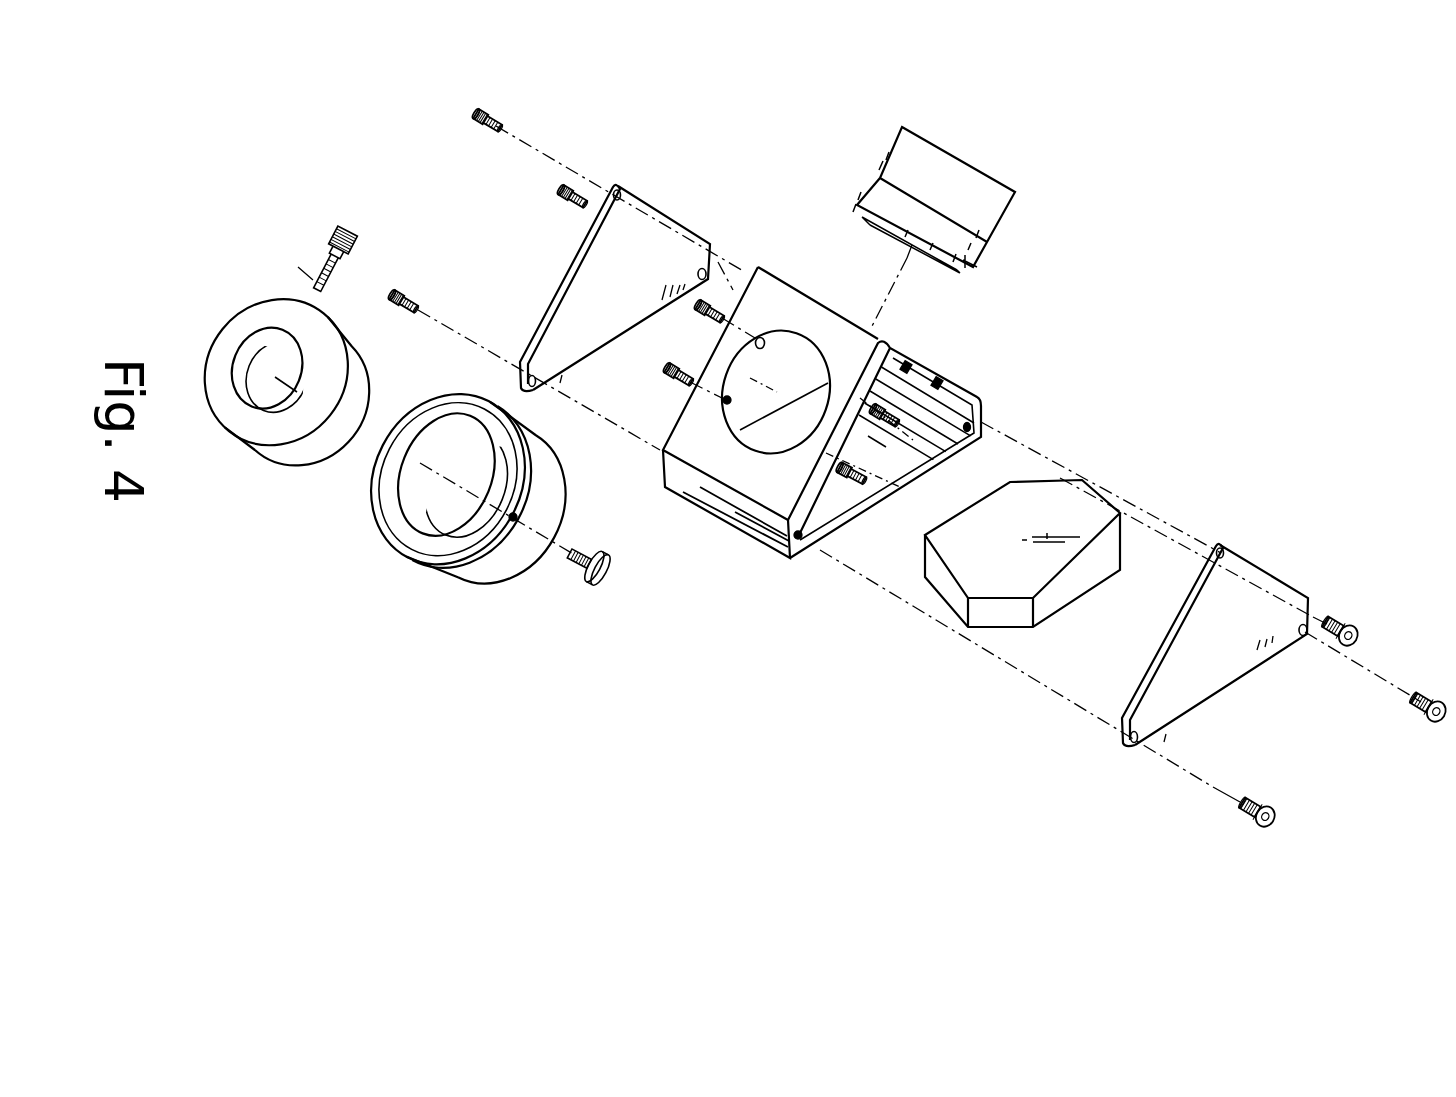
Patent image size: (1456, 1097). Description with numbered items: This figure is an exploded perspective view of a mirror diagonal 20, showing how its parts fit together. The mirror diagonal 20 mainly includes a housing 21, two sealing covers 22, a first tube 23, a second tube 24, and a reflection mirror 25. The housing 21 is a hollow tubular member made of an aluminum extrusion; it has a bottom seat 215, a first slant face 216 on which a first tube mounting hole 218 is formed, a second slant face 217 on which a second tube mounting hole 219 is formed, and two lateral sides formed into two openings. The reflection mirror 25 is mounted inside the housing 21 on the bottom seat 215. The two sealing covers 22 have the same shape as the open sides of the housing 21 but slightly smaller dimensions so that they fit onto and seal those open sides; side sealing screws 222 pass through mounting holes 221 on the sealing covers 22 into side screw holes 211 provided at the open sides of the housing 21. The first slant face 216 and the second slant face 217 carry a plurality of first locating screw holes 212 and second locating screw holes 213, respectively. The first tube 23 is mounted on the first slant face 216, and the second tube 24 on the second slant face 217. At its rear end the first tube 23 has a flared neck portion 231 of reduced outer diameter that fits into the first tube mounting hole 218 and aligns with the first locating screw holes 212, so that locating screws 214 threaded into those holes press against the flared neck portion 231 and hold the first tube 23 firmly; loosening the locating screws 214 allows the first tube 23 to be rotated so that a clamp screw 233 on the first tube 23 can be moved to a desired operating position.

The mirror diagonal 20 is at (785, 617).
The housing 21 is at (748, 515).
The side screw holes 211 is at (987, 420).
The first locating screw holes 212 is at (762, 338).
The second locating screw holes 213 is at (917, 363).
The locating screws 214 is at (848, 483).
The bottom seat 215 is at (878, 443).
The first slant face 216 is at (735, 460).
The second slant face 217 is at (977, 372).
The first tube mounting hole 218 is at (810, 337).
The second tube mounting hole 219 is at (940, 367).
The sealing covers 22 is at (630, 280).
The mounting holes 221 is at (520, 357).
The side sealing screws 222 is at (1358, 632).
The first tube 23 is at (427, 563).
The flared neck portion 231 is at (493, 587).
The clamp screw 233 is at (583, 572).
The second tube 24 is at (987, 220).
The reflection mirror 25 is at (1073, 525).